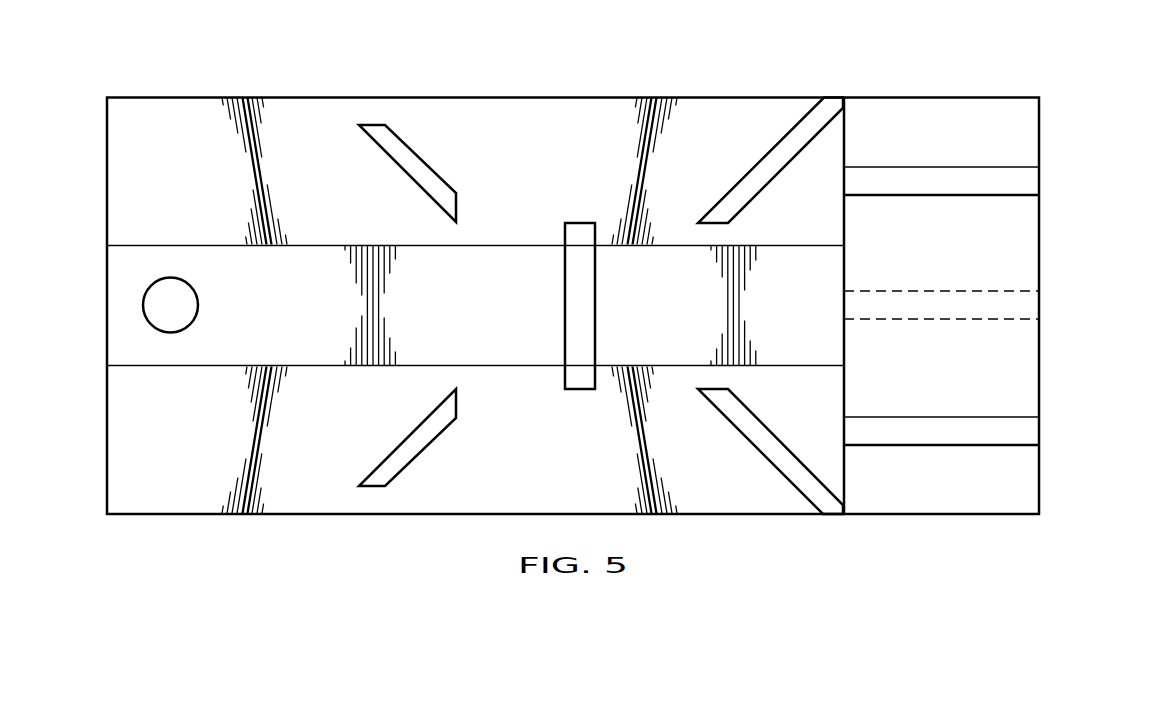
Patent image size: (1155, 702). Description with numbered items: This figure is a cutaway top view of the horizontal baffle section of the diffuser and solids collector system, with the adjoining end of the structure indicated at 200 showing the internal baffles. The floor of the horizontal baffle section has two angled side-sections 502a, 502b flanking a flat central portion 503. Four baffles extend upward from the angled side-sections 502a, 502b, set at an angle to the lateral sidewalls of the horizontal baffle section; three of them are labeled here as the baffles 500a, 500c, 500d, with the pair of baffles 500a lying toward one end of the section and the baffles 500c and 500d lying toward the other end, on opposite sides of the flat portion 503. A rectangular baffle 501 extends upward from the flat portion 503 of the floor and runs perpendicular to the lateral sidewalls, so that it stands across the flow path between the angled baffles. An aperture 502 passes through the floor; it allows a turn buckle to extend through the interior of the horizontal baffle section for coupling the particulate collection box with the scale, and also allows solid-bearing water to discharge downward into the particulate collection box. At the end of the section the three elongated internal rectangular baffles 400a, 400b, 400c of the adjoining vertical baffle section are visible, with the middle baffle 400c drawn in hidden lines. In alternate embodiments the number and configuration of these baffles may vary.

The substrate / device 200 is at (1047, 243).
The elongated internal rectangular baffle 400a is at (1020, 167).
The elongated internal rectangular baffle 400b is at (1020, 417).
The elongated internal rectangular baffle 400c is at (1008, 291).
The baffle 500a is at (737, 178).
The baffle 500c is at (405, 175).
The baffle 500d is at (406, 433).
The rectangular baffle 501 is at (565, 307).
The aperture 502 is at (188, 308).
The angled side-section of the floor 502a is at (461, 111).
The angled side-section of the floor 502b is at (442, 501).
The flat portion of the floor 503 is at (517, 258).